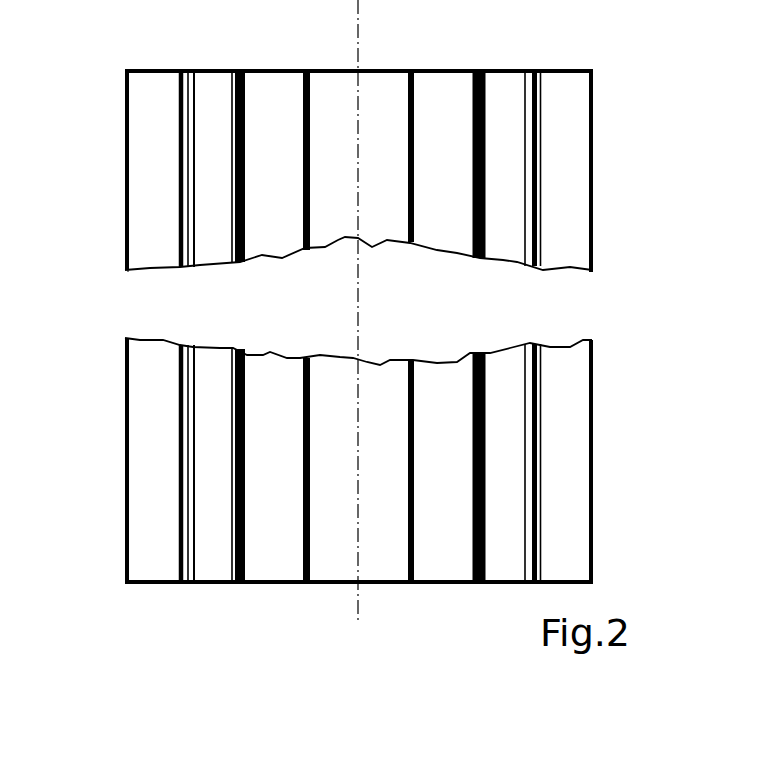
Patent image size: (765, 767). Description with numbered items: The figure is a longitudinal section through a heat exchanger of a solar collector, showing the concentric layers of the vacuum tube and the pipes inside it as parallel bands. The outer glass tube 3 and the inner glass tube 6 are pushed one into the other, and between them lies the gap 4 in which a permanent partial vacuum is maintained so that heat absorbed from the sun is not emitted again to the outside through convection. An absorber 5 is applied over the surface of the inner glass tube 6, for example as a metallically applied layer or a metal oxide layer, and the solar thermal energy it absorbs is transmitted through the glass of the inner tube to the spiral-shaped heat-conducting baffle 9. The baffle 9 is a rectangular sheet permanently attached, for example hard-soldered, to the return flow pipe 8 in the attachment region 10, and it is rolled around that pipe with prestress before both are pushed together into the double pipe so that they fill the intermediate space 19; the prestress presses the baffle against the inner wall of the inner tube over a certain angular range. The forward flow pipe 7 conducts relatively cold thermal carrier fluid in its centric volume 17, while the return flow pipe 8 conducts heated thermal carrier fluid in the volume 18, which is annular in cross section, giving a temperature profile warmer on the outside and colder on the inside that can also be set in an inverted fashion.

The glass tube 3 is at (127, 268).
The gap 4 is at (153, 220).
The absorber 5 is at (182, 115).
The inner glass tube 6 is at (185, 158).
The forward flow pipe 7 is at (412, 98).
The return flow pipe 8 is at (252, 100).
The heat-conducting baffle 9 is at (178, 89).
The attachment region 10 is at (232, 97).
The centric volume 17 is at (343, 104).
The annular volume 18 is at (440, 233).
The intermediate space 19 is at (507, 240).